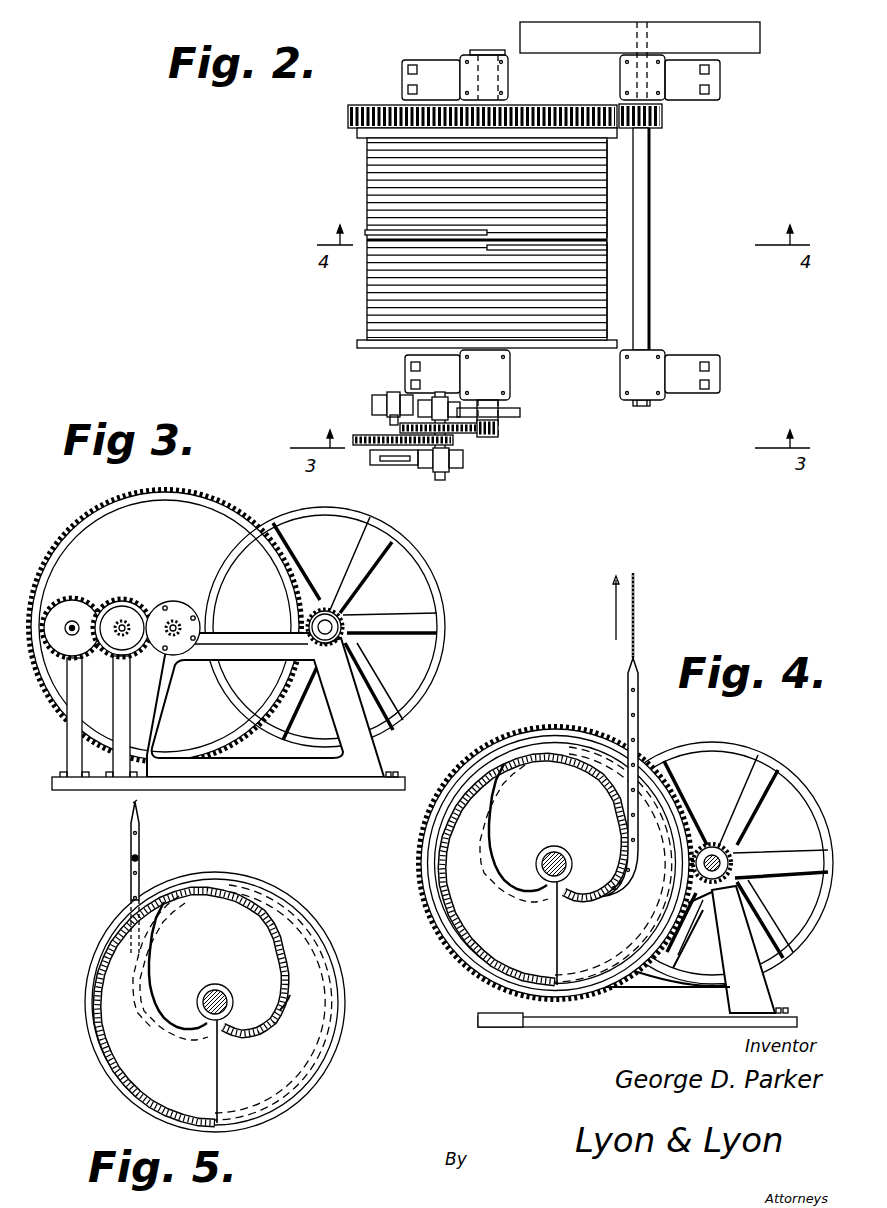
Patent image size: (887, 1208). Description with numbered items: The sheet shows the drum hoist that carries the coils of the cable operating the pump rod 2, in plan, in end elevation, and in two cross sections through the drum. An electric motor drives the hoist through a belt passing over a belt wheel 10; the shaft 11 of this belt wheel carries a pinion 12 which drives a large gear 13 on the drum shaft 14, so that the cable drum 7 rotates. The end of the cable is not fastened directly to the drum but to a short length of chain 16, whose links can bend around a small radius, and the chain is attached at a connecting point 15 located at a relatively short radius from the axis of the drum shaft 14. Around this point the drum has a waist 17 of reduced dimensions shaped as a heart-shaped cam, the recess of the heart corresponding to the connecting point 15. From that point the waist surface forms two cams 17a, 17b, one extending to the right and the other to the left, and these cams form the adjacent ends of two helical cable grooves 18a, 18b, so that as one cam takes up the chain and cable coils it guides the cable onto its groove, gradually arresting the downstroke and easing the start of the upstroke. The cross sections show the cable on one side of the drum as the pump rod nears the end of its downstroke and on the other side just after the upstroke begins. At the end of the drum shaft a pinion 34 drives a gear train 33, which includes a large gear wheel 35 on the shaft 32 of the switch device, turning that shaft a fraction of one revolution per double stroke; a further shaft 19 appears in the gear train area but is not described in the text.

In FIG. 4, the pump rod 2 is at (636, 583).
In FIG. 5, the pump rod 2 is at (137, 803).
In FIG. 2, the cable drum 7 is at (375, 283).
In FIG. 3, the cable drum 7 is at (165, 528).
In FIG. 2, the belt wheel 10 is at (740, 48).
In FIG. 3, the belt wheel 10 is at (440, 580).
In FIG. 4, the belt wheel 10 is at (790, 775).
In FIG. 2, the shaft of belt wheel 11 is at (650, 160).
In FIG. 3, the shaft of belt wheel 11 is at (331, 626).
In FIG. 4, the shaft of belt wheel 11 is at (720, 860).
In FIG. 2, the pinion 12 is at (662, 113).
In FIG. 3, the pinion 12 is at (325, 612).
In FIG. 4, the pinion 12 is at (712, 845).
In FIG. 2, the large gear 13 is at (348, 118).
In FIG. 3, the large gear 13 is at (250, 505).
In FIG. 4, the large gear 13 is at (575, 727).
In FIG. 2, the drum shaft 14 is at (488, 50).
In FIG. 4, the drum shaft 14 is at (555, 846).
In FIG. 5, the drum shaft 14 is at (215, 984).
In FIG. 4, the connecting point 15 is at (560, 905).
In FIG. 5, the connecting point 15 is at (220, 1022).
In FIG. 4, the short length of chain 16 is at (640, 700).
In FIG. 5, the short length of chain 16 is at (140, 840).
In FIG. 4, the waist 17 is at (515, 757).
In FIG. 5, the waist 17 is at (195, 890).
In FIG. 2, the cam 17a is at (400, 233).
In FIG. 4, the cam 17a is at (520, 888).
In FIG. 5, the cam 17a is at (172, 1025).
In FIG. 2, the cam 17b is at (560, 247).
In FIG. 4, the cam 17b is at (615, 887).
In FIG. 5, the cam 17b is at (276, 1015).
In FIG. 2, the helical cable groove 18a is at (607, 210).
In FIG. 2, the helical cable groove 18b is at (607, 325).
In FIG. 2, the counter shaft 19 is at (440, 460).
In FIG. 2, the shaft 32 is at (398, 428).
In FIG. 3, the gear train 33 is at (135, 600).
In FIG. 2, the pinion 34 is at (498, 432).
In FIG. 3, the pinion 34 is at (181, 627).
In FIG. 2, the large gear wheel 35 is at (365, 445).
In FIG. 3, the large gear wheel 35 is at (80, 598).